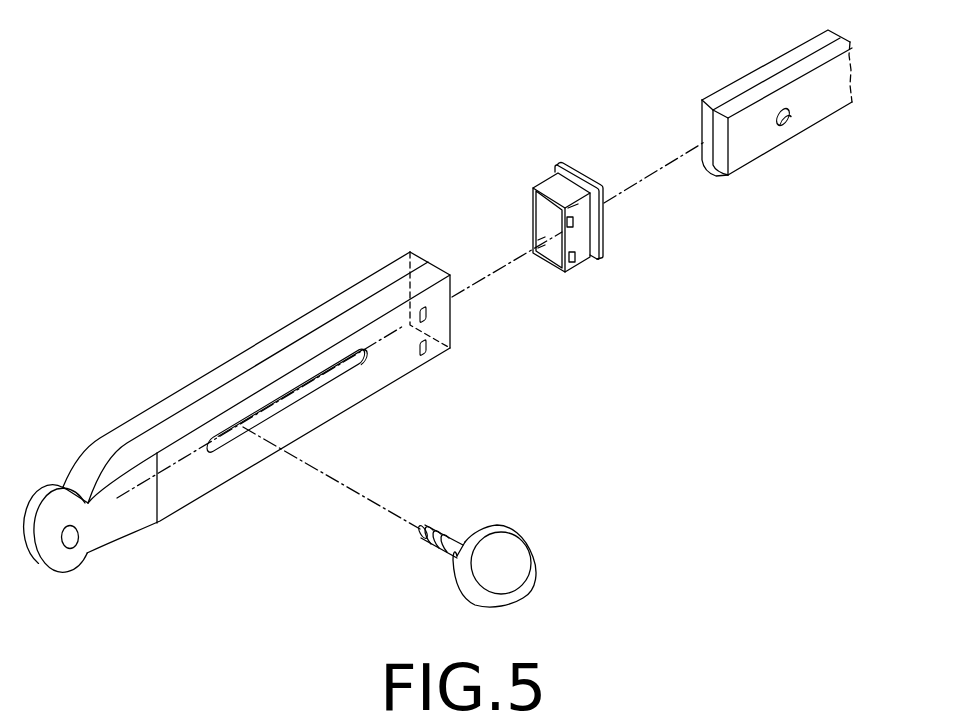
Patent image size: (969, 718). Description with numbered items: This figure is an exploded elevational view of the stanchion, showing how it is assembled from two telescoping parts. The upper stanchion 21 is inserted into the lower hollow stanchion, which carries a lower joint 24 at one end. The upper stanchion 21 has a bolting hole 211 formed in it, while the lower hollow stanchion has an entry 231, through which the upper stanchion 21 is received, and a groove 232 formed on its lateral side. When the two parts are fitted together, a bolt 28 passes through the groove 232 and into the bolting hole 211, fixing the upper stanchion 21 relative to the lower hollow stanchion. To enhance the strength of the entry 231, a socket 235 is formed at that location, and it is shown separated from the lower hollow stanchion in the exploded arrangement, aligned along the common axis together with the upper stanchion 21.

The upper stanchion 21 is at (766, 66).
The bolting hole 211 is at (792, 122).
The entry 231 is at (415, 252).
The groove 232 is at (343, 377).
The socket 235 is at (583, 255).
The lower joint 24 is at (67, 562).
The bolt 28 is at (443, 532).